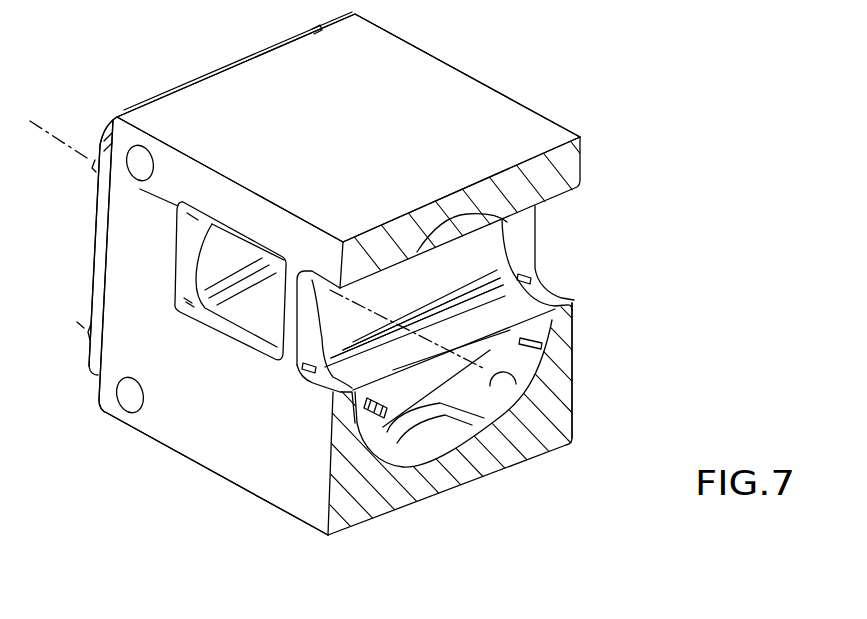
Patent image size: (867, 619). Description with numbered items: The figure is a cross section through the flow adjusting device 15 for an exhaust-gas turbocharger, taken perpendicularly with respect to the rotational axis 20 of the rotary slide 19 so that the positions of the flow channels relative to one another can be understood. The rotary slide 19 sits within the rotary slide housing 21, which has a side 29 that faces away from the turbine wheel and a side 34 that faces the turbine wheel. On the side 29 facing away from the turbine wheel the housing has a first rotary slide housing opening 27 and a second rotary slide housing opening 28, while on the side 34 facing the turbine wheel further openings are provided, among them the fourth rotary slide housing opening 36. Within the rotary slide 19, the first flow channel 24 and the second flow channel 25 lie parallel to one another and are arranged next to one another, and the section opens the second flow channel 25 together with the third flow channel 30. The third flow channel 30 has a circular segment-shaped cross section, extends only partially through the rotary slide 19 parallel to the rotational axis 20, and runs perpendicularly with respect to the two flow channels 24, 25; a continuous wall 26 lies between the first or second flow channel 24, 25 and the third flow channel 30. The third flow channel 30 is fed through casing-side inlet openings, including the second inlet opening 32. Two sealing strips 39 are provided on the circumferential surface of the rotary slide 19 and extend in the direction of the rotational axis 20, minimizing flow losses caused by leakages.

The flow adjusting device 15 is at (494, 64).
The rotary slide housing 21 is at (513, 128).
The rotational axis 20 is at (47, 127).
The first flow channel 24 is at (247, 308).
The first rotary slide housing opening 27 is at (242, 340).
The side which faces away from the turbine wheel 29 is at (193, 453).
The second rotary slide housing opening 28 is at (333, 393).
The second flow channel 25 is at (453, 277).
The rotary slide 19 is at (477, 260).
The fourth rotary slide housing opening 36 is at (525, 297).
The sealing strips 39 is at (573, 318).
The continuous wall 26 is at (483, 353).
The side which faces the turbine wheel 34 is at (573, 388).
The third flow channel 30 is at (483, 397).
The second inlet opening 32 is at (475, 428).